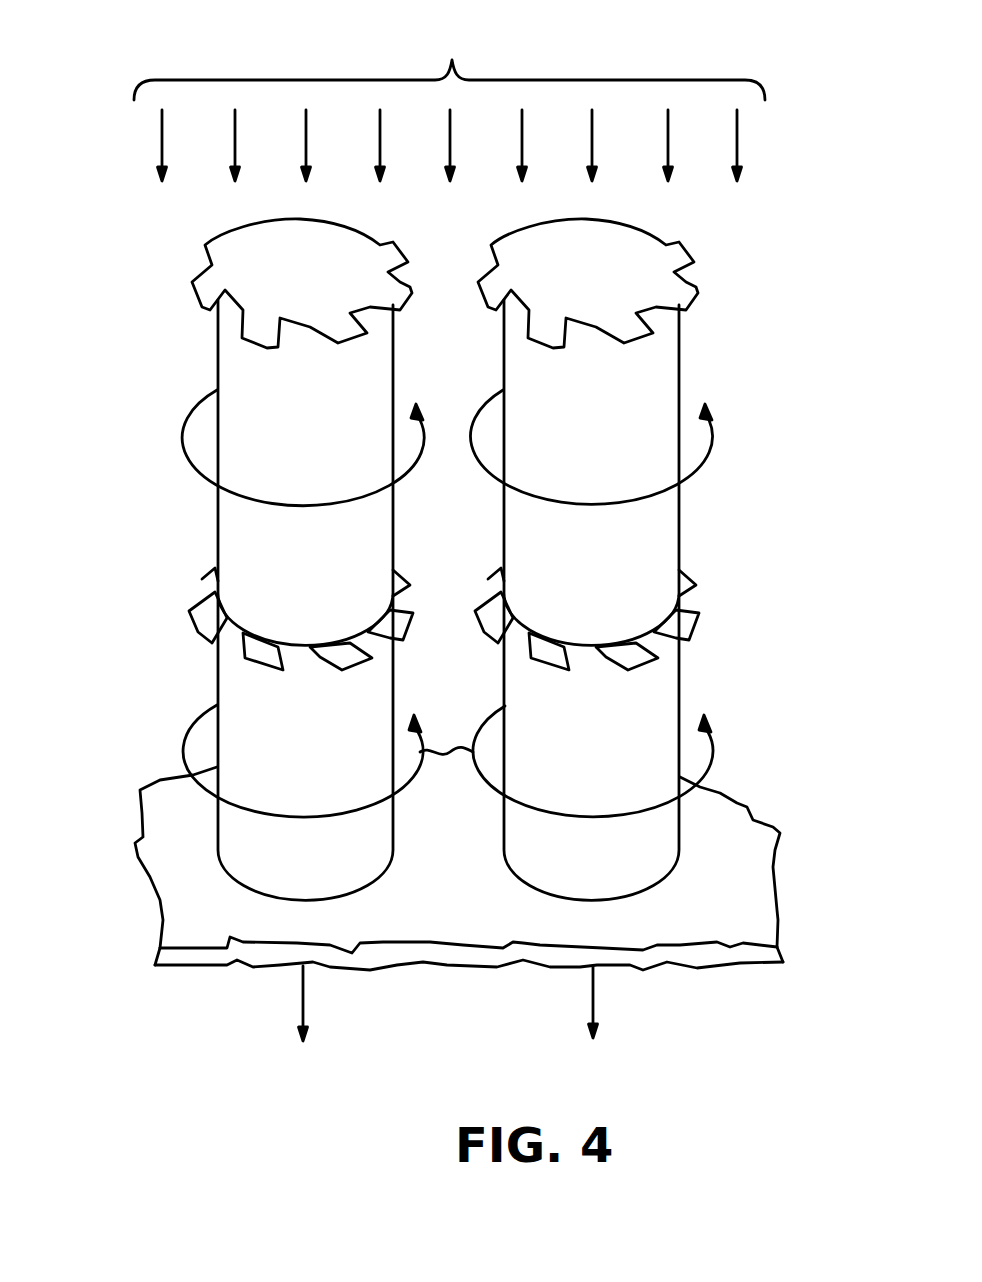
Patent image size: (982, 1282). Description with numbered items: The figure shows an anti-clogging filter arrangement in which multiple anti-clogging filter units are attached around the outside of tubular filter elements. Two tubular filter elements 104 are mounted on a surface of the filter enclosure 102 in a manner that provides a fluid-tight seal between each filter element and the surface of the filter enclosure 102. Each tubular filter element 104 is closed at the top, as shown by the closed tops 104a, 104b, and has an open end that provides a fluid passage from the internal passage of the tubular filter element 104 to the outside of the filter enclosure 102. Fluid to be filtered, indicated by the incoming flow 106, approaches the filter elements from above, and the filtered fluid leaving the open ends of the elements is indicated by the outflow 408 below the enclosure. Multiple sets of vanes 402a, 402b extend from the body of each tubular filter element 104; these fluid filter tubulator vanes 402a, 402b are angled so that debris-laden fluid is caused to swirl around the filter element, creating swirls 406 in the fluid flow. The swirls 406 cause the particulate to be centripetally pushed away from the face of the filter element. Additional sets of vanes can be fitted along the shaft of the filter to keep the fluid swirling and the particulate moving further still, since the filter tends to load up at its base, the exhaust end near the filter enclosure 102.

The incident light 106 is at (449, 99).
The closed tops 104a is at (333, 292).
The second nanostructure segment 104b is at (630, 296).
The tubular filter elements 104 is at (343, 763).
The vanes 402a is at (255, 355).
The vanes 402b is at (250, 665).
The swirls 406 is at (183, 452).
The filter enclosure 102 is at (735, 918).
The transmitted light 408 is at (300, 1003).